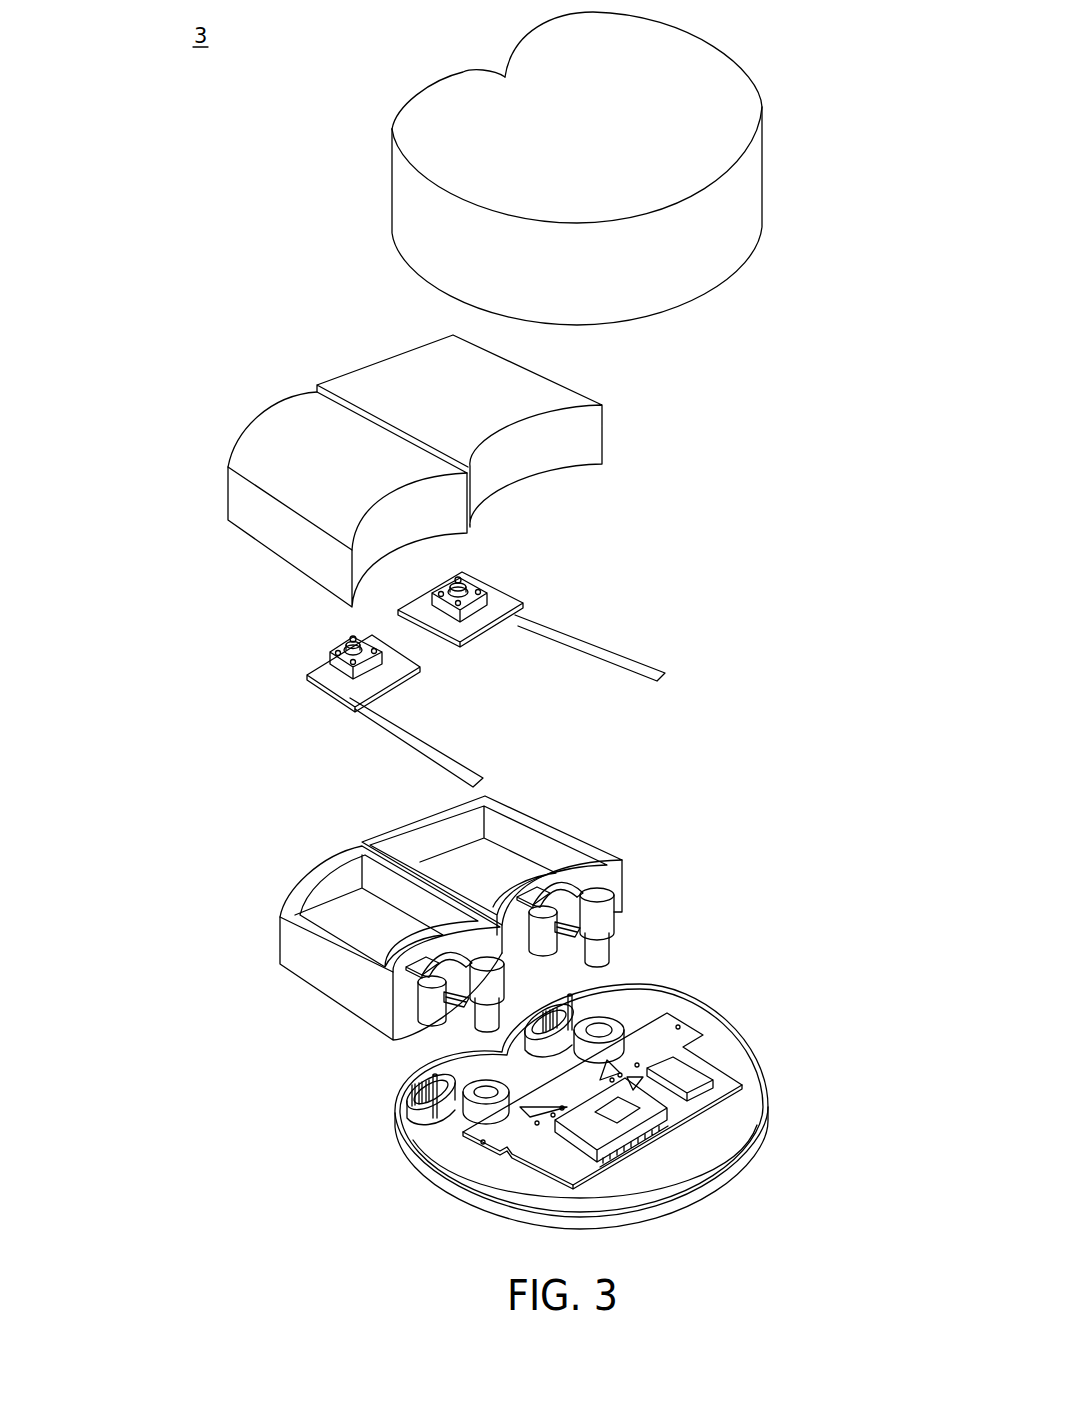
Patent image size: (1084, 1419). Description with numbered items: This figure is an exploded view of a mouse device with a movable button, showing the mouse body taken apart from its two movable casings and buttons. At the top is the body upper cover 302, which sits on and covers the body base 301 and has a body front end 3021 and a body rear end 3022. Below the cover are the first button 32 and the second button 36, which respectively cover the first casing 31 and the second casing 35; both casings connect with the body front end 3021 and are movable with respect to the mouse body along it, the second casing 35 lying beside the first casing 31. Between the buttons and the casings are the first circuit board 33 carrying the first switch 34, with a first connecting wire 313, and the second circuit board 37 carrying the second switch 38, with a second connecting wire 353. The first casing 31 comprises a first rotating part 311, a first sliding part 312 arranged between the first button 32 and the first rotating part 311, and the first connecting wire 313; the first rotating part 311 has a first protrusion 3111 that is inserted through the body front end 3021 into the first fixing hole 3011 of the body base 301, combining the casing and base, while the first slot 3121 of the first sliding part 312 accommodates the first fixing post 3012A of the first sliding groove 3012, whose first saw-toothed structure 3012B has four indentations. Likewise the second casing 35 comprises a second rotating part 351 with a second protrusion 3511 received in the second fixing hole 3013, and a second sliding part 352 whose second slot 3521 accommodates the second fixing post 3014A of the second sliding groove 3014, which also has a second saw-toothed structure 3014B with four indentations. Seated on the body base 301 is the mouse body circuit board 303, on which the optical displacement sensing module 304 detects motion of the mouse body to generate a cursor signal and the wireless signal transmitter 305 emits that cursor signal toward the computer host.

The body upper cover 302 is at (695, 67).
The body front end 3021 is at (468, 94).
The body rear end 3022 is at (668, 190).
The first button 32 is at (283, 437).
The second button 36 is at (410, 363).
The second circuit board 37 is at (500, 603).
The second switch 38 is at (463, 582).
The second connecting wire 353 is at (582, 642).
The first circuit board 33 is at (333, 682).
The first switch 34 is at (350, 647).
The first connecting wire 313 is at (410, 735).
The second casing 35 is at (508, 833).
The second sliding part 352 is at (553, 892).
The second slot 3521 is at (572, 878).
The second rotating part 351 is at (597, 900).
The second protrusion 3511 is at (600, 947).
The first casing 31 is at (327, 890).
The first sliding part 312 is at (427, 992).
The first slot 3121 is at (437, 968).
The first rotating part 311 is at (482, 982).
The first protrusion 3111 is at (483, 1022).
The body base 301 is at (723, 1130).
The first fixing hole 3011 is at (485, 1095).
The first sliding groove 3012 is at (415, 1123).
The first fixing post 3012A is at (435, 1079).
The first saw-toothed structure 3012B is at (415, 1102).
The second fixing hole 3013 is at (600, 1030).
The second sliding groove 3014 is at (575, 997).
The second fixing post 3014A is at (613, 1000).
The second saw-toothed structure 3014B is at (545, 1020).
The mouse body circuit board 303 is at (682, 1102).
The optical displacement sensing module 304 is at (637, 1107).
The wireless signal transmitter 305 is at (697, 1078).